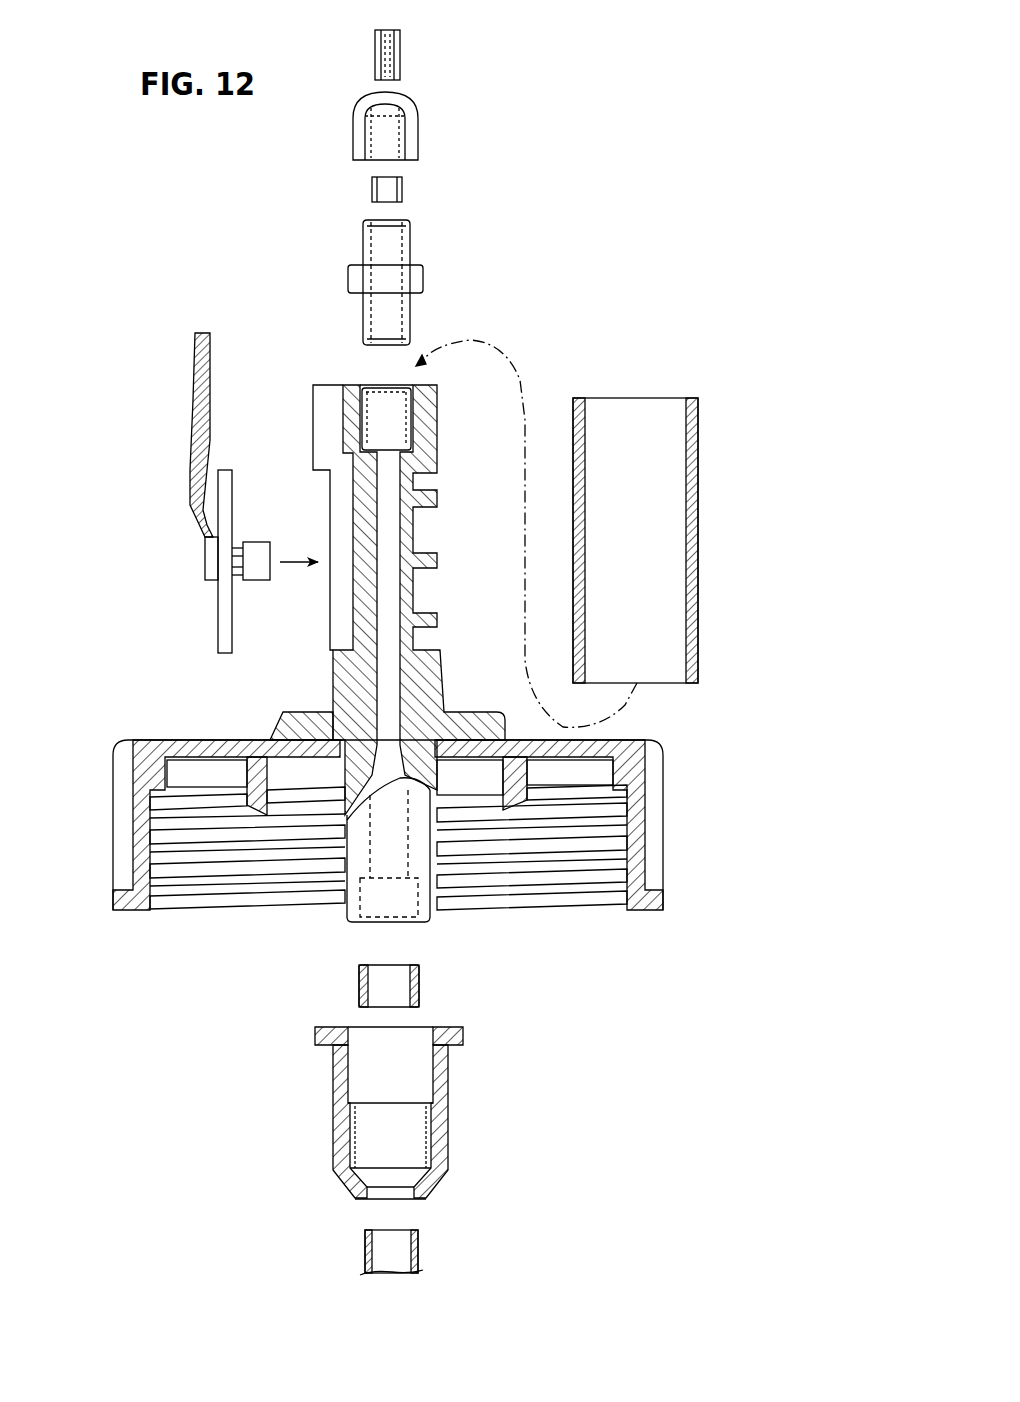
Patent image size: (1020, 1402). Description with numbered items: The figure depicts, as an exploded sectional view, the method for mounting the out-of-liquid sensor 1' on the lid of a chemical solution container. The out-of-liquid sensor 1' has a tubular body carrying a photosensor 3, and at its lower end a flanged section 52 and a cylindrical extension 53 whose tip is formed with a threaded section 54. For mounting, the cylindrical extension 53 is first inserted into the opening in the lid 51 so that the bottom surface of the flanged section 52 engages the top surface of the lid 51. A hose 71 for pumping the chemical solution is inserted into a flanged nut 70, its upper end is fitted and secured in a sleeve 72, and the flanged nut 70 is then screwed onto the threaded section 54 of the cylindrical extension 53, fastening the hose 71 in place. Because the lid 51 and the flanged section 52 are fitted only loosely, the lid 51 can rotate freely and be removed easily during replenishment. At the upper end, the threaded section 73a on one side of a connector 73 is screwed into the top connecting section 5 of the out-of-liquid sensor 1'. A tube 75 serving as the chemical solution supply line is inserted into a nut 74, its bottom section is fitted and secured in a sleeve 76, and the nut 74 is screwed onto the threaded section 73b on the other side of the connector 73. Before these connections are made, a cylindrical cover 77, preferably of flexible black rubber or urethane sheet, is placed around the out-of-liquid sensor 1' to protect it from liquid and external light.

The out-of-liquid sensor 1' is at (364, 600).
The photosensor 3 is at (258, 540).
The top connecting section 5 is at (372, 408).
The lid 51 is at (667, 792).
The flanged section 52 is at (270, 735).
The cylindrical extension 53 is at (350, 792).
The threaded section 54 is at (350, 905).
The flanged nut 70 is at (447, 1097).
The hose 71 is at (419, 1252).
The sleeve 72 is at (420, 980).
The connector 73 is at (428, 279).
The threaded section 73a is at (412, 322).
The threaded section 73b is at (412, 237).
The nut 74 is at (418, 122).
The tube 75 is at (400, 52).
The sleeve 76 is at (372, 190).
The cylindrical cover 77 is at (698, 527).